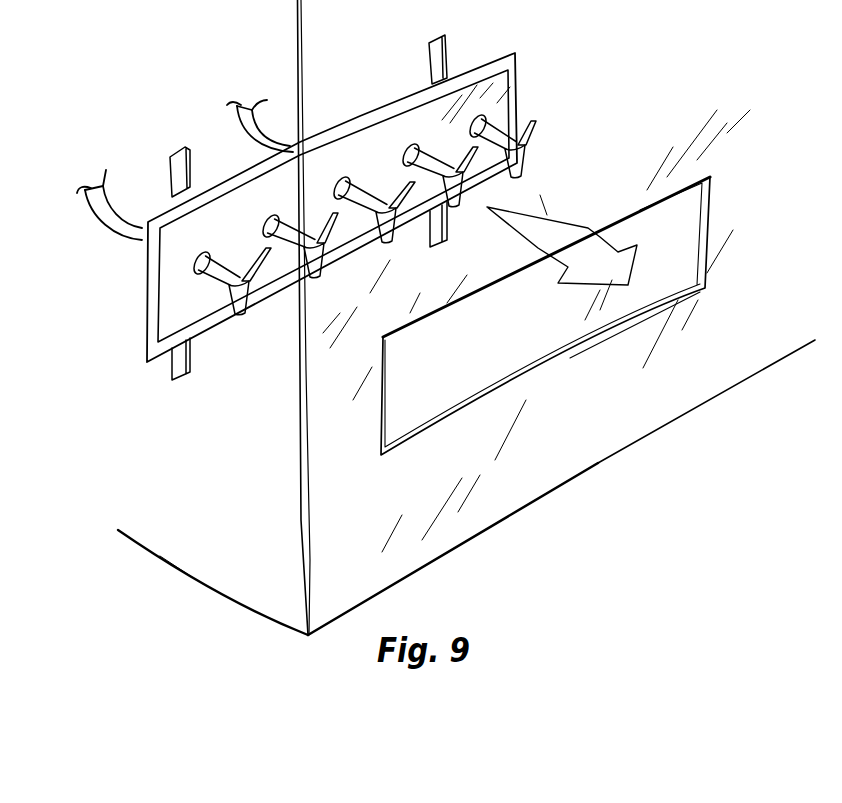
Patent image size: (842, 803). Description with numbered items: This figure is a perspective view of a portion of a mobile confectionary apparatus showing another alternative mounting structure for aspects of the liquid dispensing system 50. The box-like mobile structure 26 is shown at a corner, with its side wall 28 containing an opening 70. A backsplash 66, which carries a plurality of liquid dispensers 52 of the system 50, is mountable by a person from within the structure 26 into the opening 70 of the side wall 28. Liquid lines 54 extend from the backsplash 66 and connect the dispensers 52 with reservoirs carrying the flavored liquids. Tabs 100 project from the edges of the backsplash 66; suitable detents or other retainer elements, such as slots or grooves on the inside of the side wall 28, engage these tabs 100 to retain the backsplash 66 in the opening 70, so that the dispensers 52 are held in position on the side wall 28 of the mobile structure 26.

The mobile structure 26 is at (187, 575).
The side wall 28 is at (337, 578).
The liquid dispensing system 50 is at (522, 80).
The liquid dispensers 52 is at (287, 240).
The liquid lines 54 is at (260, 130).
The backsplash 66 is at (172, 278).
The opening 70 is at (686, 216).
The tabs 100 is at (170, 168).